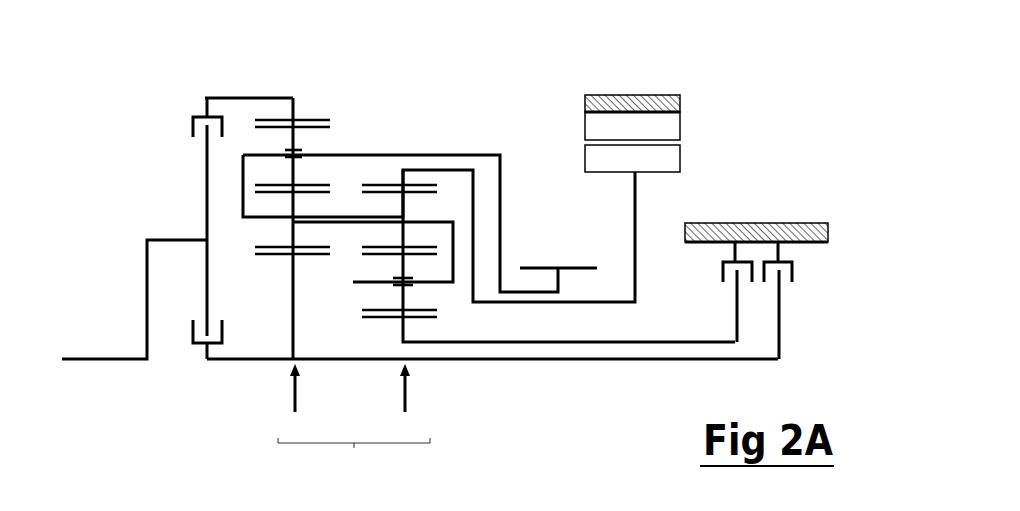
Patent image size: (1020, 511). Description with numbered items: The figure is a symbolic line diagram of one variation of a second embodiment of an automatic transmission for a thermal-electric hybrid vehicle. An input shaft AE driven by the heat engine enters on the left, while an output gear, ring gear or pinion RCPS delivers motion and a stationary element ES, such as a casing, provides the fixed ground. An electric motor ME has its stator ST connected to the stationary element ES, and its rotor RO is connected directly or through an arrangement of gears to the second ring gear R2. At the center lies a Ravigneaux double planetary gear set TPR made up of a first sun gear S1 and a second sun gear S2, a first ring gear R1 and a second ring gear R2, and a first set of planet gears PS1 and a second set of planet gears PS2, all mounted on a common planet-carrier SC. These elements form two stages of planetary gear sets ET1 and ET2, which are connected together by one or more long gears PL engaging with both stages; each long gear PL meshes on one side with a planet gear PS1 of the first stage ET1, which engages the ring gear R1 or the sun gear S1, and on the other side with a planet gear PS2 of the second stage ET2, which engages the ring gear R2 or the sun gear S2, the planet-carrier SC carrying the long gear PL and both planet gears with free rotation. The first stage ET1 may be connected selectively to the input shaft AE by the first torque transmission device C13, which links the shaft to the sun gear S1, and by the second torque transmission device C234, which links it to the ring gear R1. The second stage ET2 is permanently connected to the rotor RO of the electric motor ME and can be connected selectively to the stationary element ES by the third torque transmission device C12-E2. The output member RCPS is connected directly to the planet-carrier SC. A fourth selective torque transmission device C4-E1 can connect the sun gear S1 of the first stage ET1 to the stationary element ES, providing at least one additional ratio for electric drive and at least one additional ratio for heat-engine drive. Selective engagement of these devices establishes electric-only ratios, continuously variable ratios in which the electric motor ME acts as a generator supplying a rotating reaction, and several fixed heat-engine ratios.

The input shaft AE is at (102, 355).
The second selective torque transmission device C234 is at (192, 126).
The first selective torque transmission device C13 is at (207, 350).
The first ring gear R1 is at (300, 121).
The first set of planet gears PS1 is at (308, 143).
The first sun gear S1 is at (278, 257).
The second ring gear R2 is at (393, 182).
The second set of planet gears PS2 is at (412, 284).
The second sun gear S2 is at (413, 322).
The common planet-carrier SC is at (443, 216).
The long gear PL is at (337, 228).
The output gear, ring gear or pinion RCPS is at (554, 266).
The stationary element ES is at (796, 223).
The stator ST is at (682, 120).
The rotor RO is at (682, 158).
The electric motor ME is at (708, 146).
The fourth selective torque transmission device C4-E1 is at (792, 281).
The third selective torque transmission device C12-E2 is at (750, 283).
The first stage of planetary gear set ET1 is at (295, 399).
The second stage of planetary gear set ET2 is at (404, 399).
The Ravigneaux double planetary gear set TPR is at (354, 457).